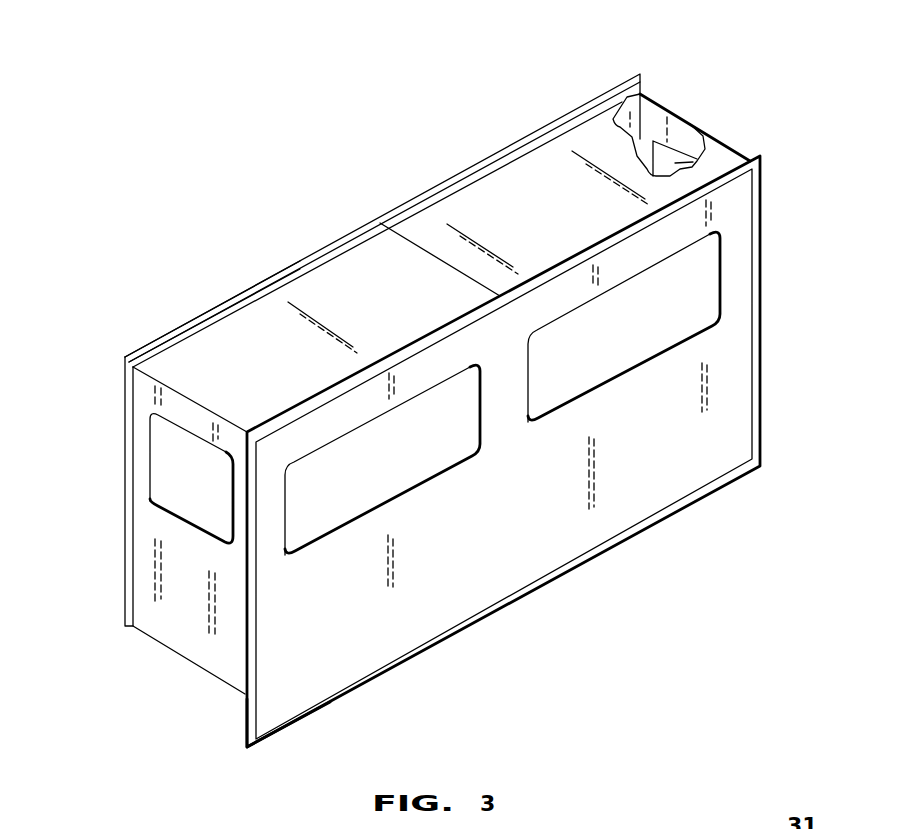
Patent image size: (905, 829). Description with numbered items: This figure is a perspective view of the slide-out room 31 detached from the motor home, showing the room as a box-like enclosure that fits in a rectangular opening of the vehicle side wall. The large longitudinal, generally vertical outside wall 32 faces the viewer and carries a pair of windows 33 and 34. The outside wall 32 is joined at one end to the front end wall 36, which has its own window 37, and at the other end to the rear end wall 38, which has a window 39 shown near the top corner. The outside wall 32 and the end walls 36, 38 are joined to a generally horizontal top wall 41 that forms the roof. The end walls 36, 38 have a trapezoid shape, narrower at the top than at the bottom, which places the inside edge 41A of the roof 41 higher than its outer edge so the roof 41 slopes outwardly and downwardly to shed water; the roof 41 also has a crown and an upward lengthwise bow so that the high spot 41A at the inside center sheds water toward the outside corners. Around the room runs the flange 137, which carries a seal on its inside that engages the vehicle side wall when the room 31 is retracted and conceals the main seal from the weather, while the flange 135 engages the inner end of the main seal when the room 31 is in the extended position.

The slide-out room 31 is at (671, 94).
The outside wall 32 is at (490, 586).
The window 33 is at (415, 458).
The window 34 is at (630, 345).
The front end wall 36 is at (168, 588).
The window 37 is at (173, 480).
The rear end wall 38 is at (675, 128).
The window 39 is at (727, 150).
The top wall 41 is at (455, 220).
The inside edge of roof 41A is at (390, 227).
The flange 135 is at (150, 348).
The flange 137 is at (247, 718).